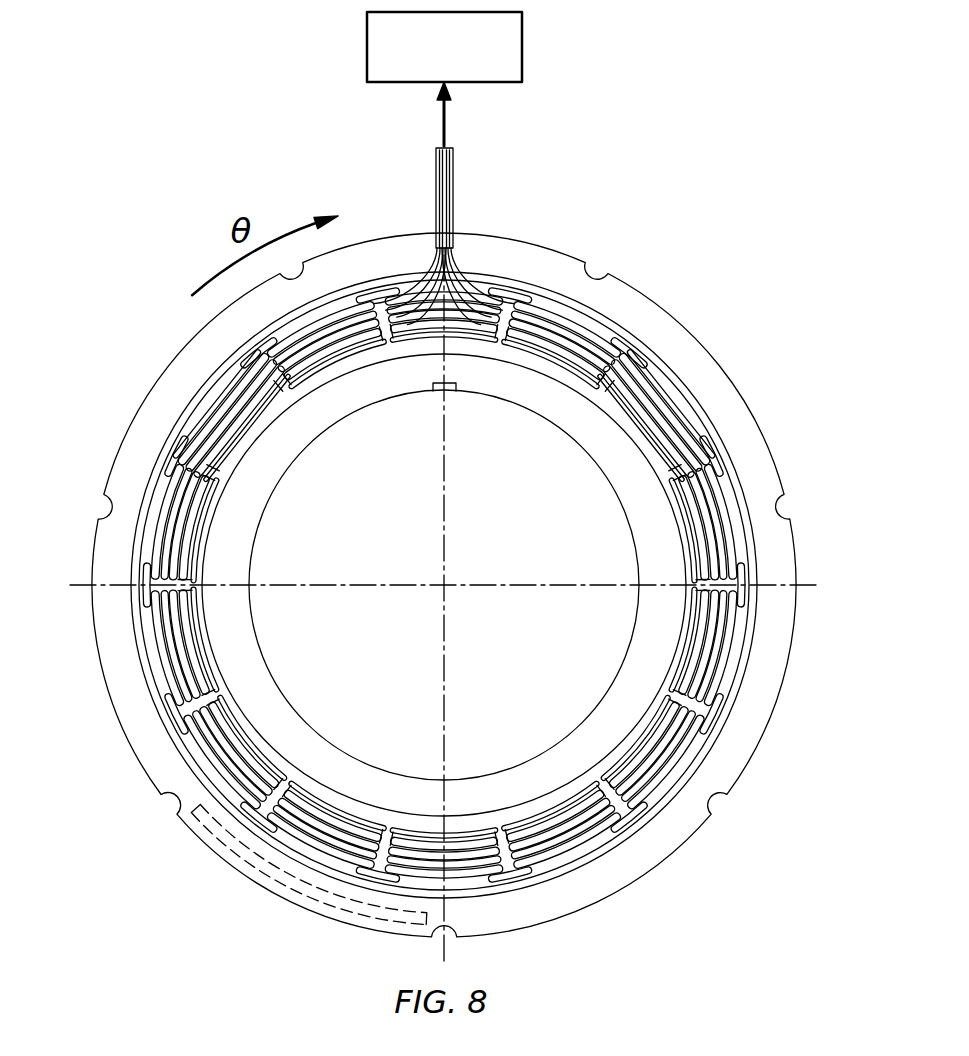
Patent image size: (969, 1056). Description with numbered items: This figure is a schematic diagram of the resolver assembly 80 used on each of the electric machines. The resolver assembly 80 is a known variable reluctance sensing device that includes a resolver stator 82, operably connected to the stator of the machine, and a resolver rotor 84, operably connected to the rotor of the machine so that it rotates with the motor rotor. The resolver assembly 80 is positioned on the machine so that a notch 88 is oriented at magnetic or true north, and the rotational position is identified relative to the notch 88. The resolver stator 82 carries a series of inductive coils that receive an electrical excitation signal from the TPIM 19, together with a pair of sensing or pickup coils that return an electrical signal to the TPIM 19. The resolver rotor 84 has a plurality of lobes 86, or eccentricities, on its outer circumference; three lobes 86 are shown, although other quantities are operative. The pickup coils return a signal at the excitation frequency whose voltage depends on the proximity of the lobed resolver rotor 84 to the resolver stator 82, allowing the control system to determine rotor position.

The TPIM 19 is at (367, 38).
The resolver assembly 80 is at (658, 325).
The resolver stator 82 is at (670, 417).
The resolver rotor 84 is at (658, 532).
The lobes 86 is at (656, 683).
The notch 88 is at (450, 382).